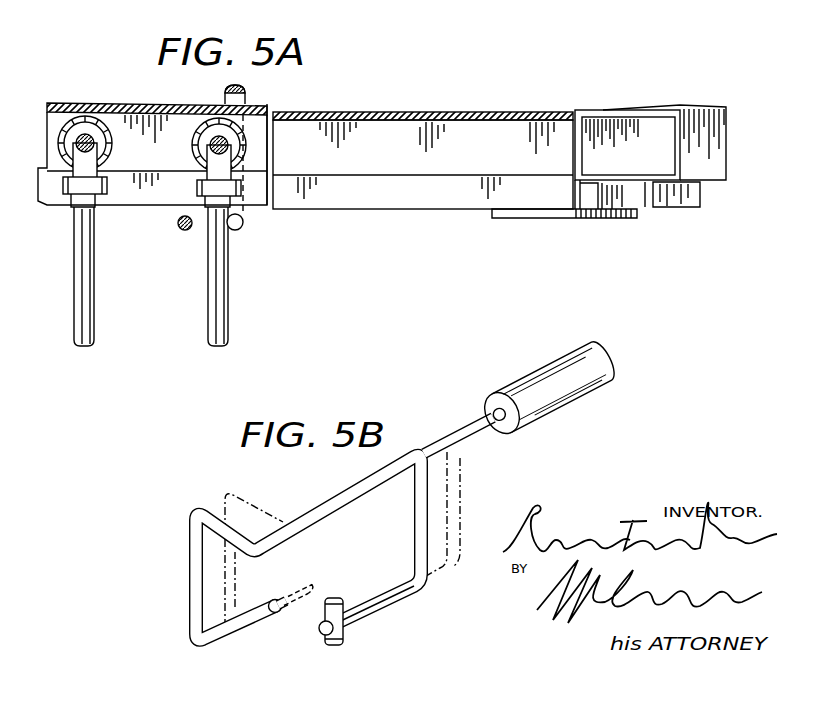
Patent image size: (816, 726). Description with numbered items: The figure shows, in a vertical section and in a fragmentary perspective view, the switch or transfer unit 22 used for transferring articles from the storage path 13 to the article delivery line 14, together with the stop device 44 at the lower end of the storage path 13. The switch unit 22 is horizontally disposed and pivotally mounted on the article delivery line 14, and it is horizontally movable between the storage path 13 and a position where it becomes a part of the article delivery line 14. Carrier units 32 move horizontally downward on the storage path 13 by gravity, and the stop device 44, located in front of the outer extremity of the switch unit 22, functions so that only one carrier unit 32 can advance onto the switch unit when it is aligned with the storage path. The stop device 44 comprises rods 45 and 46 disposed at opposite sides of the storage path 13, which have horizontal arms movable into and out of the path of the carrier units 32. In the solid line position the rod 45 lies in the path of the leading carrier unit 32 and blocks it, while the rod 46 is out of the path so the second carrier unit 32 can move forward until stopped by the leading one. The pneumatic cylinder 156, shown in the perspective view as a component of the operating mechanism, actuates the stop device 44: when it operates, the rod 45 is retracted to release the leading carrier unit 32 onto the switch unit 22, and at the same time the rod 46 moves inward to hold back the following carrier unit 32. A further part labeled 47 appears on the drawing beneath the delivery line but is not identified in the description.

In FIG. 5A, the storage path 13 is at (159, 104).
In FIG. 5A, the switch unit 22 is at (439, 111).
In FIG. 5A, the article delivery line 14 is at (648, 106).
In FIG. 5A, the bottom flange 47 is at (571, 219).
In FIG. 5A, the stop device 44 is at (192, 255).
In FIG. 5B, the stop device 44 is at (185, 577).
In FIG. 5A, the carrier unit 32 is at (100, 301).
In FIG. 5B, the carrier unit 32 is at (341, 602).
In FIG. 5A, the rod 46 is at (180, 228).
In FIG. 5B, the rod 46 is at (268, 599).
In FIG. 5A, the rod 45 is at (243, 226).
In FIG. 5B, the rod 45 is at (378, 607).
In FIG. 5B, the pneumatic cylinder 156 is at (559, 363).